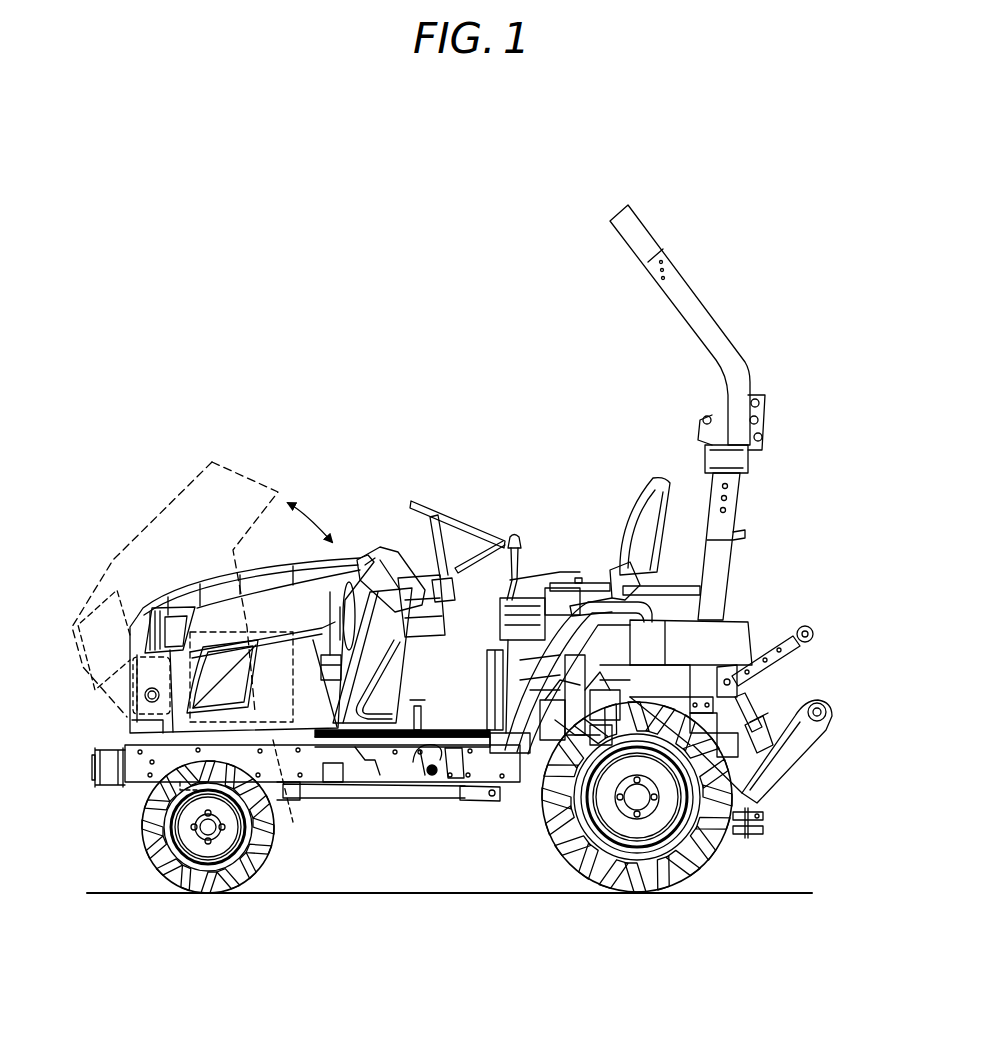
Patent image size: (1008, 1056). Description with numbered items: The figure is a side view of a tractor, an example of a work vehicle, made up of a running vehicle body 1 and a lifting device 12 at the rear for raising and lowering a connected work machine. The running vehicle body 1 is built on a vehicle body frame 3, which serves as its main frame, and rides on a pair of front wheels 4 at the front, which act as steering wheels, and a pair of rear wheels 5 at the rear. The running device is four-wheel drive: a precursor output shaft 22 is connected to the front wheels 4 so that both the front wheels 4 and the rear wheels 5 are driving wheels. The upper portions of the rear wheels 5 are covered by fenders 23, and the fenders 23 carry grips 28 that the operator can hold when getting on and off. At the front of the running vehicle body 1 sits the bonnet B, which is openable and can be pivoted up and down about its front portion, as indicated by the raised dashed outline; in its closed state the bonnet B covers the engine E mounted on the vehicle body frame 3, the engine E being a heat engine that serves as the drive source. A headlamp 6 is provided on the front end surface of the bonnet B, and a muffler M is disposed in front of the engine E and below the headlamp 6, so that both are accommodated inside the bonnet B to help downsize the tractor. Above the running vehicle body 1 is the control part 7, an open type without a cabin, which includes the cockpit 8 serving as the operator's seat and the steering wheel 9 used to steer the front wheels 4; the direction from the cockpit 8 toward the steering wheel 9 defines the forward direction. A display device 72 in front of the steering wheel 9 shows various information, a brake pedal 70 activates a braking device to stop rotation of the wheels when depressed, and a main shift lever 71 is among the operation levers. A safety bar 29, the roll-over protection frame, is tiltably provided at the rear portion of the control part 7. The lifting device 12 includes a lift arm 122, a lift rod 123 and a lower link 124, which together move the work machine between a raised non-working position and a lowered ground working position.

The running vehicle body 1 is at (308, 438).
The vehicle body frame 3 is at (125, 752).
The front wheels 4 is at (142, 834).
The rear wheels 5 is at (718, 853).
The headlamp 6 is at (170, 622).
The control part 7 is at (540, 500).
The cockpit 8 is at (653, 483).
The steering wheel 9 is at (428, 513).
The lifting device 12 is at (832, 622).
The precursor output shaft 22 is at (323, 797).
The fenders 23 is at (688, 637).
The grips 28 is at (610, 590).
The safety bar 29 is at (683, 270).
The brake pedal 70 is at (418, 708).
The main shift lever 71 is at (521, 542).
The display device 72 is at (397, 560).
The lift arm 122 is at (783, 637).
The lift rod 123 is at (740, 698).
The lower link 124 is at (817, 727).
The bonnet B is at (175, 498).
The muffler M is at (137, 693).
The engine E is at (288, 796).